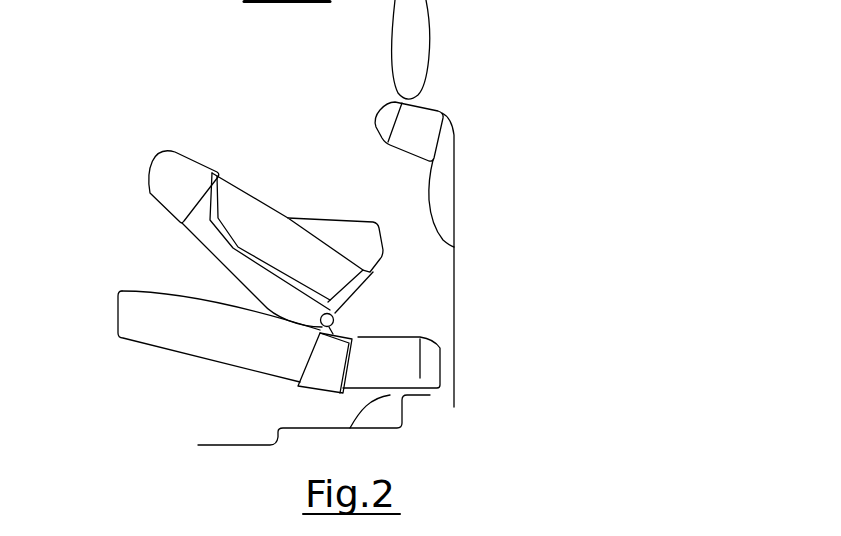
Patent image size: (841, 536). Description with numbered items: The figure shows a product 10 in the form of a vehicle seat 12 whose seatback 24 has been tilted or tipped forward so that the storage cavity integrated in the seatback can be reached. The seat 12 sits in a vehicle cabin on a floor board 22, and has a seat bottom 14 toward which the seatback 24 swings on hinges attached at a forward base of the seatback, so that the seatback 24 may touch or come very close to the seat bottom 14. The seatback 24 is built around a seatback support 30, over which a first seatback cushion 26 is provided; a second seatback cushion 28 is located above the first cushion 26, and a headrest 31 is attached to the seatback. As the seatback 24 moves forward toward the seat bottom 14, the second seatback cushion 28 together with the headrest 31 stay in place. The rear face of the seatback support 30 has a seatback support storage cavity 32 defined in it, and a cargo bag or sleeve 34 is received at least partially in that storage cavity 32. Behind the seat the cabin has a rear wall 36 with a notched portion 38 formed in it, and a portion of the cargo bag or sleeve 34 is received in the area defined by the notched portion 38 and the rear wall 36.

The product 10 is at (552, 109).
The vehicle seat 12 is at (186, 77).
The seat bottom 14 is at (118, 310).
The floor board 22 is at (235, 445).
The seatback 24 is at (183, 233).
The first seatback cushion 26 is at (210, 256).
The second seatback cushion 28 is at (438, 112).
The seatback support 30 is at (229, 186).
The headrest 31 is at (432, 53).
The seatback support storage cavity 32 is at (285, 216).
The cargo bag or sleeve 34 is at (330, 221).
The rear cabin wall 36 is at (455, 320).
The notched portion 38 is at (454, 249).